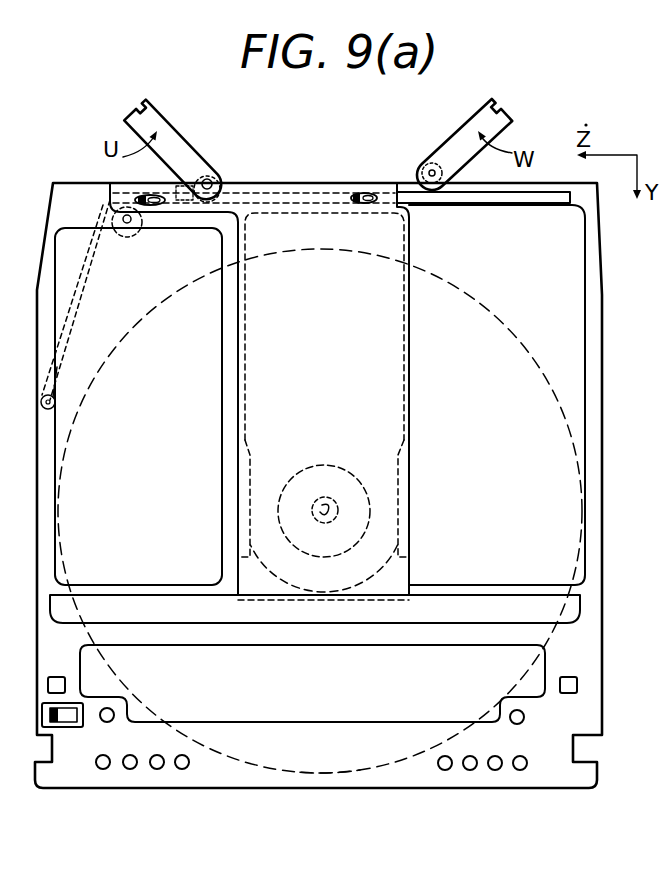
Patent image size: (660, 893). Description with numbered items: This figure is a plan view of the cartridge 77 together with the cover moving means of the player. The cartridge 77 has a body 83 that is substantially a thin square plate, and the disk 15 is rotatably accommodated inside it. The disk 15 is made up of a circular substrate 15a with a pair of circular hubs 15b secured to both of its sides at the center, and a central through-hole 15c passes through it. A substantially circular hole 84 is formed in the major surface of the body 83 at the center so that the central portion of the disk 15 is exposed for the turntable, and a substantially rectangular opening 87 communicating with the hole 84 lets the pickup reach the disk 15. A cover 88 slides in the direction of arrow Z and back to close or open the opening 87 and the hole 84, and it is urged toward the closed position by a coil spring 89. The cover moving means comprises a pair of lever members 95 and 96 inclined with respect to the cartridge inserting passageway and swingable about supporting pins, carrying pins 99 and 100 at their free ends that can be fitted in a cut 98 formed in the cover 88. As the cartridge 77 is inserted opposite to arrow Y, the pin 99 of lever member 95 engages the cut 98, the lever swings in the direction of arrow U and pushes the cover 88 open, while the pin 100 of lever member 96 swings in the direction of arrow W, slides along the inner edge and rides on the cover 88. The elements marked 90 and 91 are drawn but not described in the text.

The disk 15 is at (295, 782).
The circular substrate 15a is at (333, 773).
The circular hubs 15b is at (370, 503).
The central through-hole 15c is at (333, 503).
The cartridge 77 is at (383, 800).
The body 83 is at (245, 782).
The circular hole 84 is at (410, 530).
The rectangular opening 87 is at (405, 382).
The cover 88 is at (418, 240).
The coil spring 89 is at (92, 242).
The lever pivot 90 is at (172, 212).
The left compartment 91 is at (248, 571).
The lever member 95 is at (173, 140).
The lever member 96 is at (467, 132).
The cut 98 is at (233, 187).
The pin 99 is at (208, 173).
The pin 100 is at (428, 160).